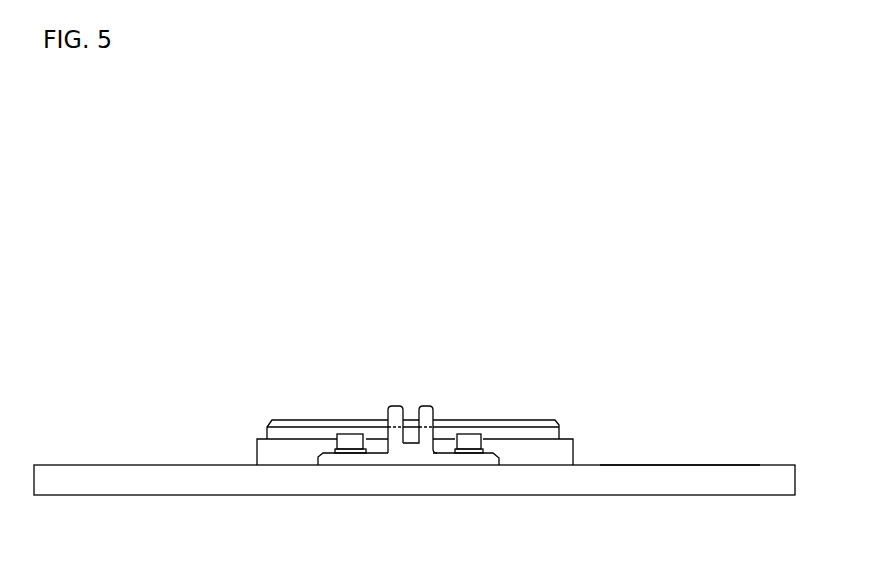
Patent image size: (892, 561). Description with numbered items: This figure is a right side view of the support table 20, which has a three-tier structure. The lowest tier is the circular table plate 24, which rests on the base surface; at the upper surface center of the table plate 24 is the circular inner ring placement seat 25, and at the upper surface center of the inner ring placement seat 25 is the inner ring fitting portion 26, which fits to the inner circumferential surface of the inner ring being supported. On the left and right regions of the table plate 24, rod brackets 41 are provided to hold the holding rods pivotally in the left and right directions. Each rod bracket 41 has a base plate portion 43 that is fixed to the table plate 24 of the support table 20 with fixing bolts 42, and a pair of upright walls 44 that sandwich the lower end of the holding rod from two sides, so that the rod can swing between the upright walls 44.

The support table 20 is at (795, 480).
The table plate 24 is at (671, 477).
The inner ring placement seat 25 is at (568, 451).
The inner ring fitting portion 26 is at (513, 433).
The rod bracket 41 is at (436, 401).
The fixing bolt 42 is at (467, 447).
The base plate portion 43 is at (474, 458).
The upright wall 44 is at (396, 405).